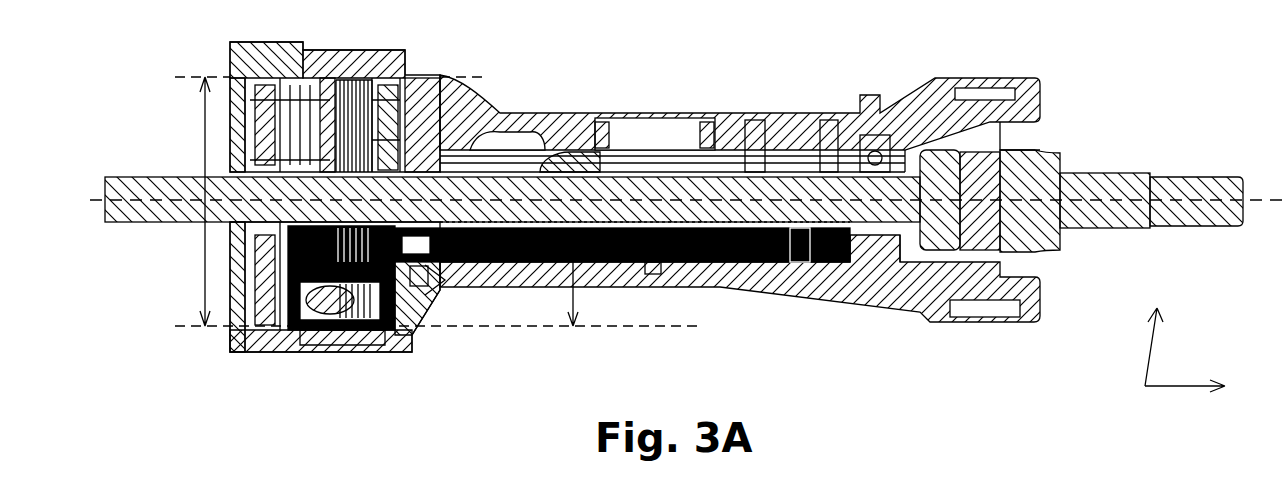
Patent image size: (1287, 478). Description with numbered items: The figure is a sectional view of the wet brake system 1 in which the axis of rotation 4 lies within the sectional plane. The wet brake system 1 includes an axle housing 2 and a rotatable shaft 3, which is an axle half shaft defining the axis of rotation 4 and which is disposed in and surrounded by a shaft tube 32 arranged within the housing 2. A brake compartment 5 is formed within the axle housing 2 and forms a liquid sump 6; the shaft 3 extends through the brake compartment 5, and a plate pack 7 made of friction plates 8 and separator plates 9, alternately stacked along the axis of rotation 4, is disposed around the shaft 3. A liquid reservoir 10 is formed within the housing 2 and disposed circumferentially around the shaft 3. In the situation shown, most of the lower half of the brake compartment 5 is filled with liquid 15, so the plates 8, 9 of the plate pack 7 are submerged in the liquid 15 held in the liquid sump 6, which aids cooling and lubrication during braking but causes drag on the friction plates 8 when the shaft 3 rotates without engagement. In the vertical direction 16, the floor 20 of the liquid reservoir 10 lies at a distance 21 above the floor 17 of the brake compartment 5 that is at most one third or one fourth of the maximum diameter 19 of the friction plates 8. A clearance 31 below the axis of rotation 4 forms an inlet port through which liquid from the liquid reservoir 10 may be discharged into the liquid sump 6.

The wet brake system 1 is at (1104, 99).
The axle housing 2 is at (387, 352).
The rotatable shaft 3 is at (150, 177).
The axis of rotation 4 is at (1115, 200).
The brake compartment 5 is at (443, 104).
The liquid sump 6 is at (282, 312).
The plate pack 7 is at (382, 100).
The friction plates 8 is at (546, 58).
The separator plates 9 is at (477, 104).
The liquid reservoir 10 is at (757, 150).
The liquid 15 is at (418, 285).
The vertical direction 16 is at (1158, 345).
The floor of the brake compartment 17 is at (330, 332).
The maximum diameter of the friction plates 19 is at (204, 252).
The floor of the liquid reservoir 20 is at (733, 285).
The distance 21 is at (578, 296).
The clearance 31 is at (430, 288).
The shaft tube 32 is at (550, 163).